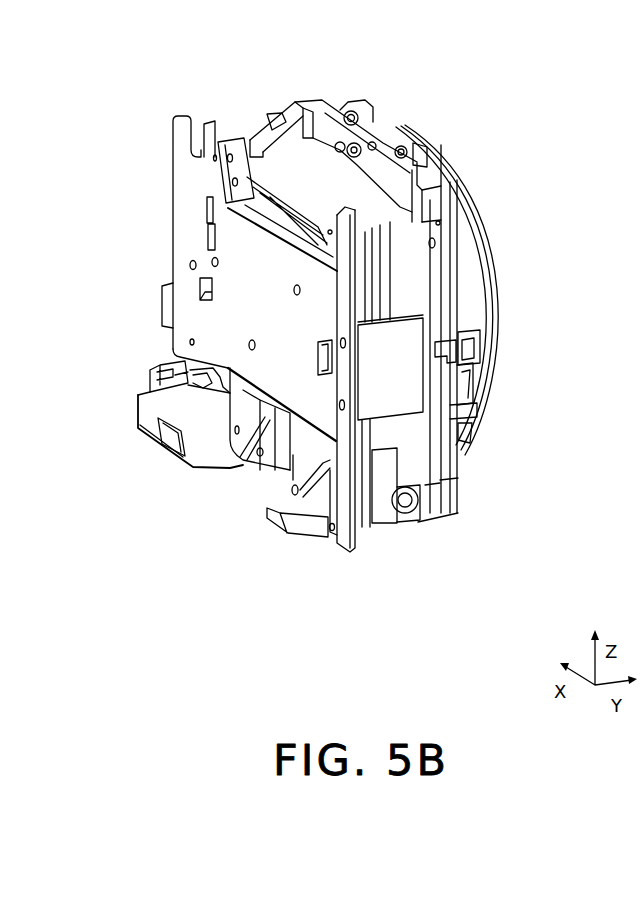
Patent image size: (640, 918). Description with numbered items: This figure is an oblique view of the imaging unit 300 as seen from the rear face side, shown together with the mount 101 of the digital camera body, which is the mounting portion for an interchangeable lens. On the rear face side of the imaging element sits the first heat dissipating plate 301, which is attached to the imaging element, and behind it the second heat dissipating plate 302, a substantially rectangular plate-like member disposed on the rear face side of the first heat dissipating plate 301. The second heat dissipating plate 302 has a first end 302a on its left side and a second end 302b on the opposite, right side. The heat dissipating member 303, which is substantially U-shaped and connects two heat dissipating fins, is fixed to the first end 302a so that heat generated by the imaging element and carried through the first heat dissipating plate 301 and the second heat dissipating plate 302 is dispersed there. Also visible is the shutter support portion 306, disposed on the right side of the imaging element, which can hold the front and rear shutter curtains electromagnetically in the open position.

The mount 101 is at (447, 115).
The imaging unit 300 is at (444, 546).
The first heat dissipating plate 301 is at (248, 143).
The second heat dissipating plate 302 is at (172, 190).
The first end 302a is at (323, 315).
The second end 302b is at (180, 218).
The heat dissipating member 303 is at (390, 377).
The shutter support portion 306 is at (245, 143).